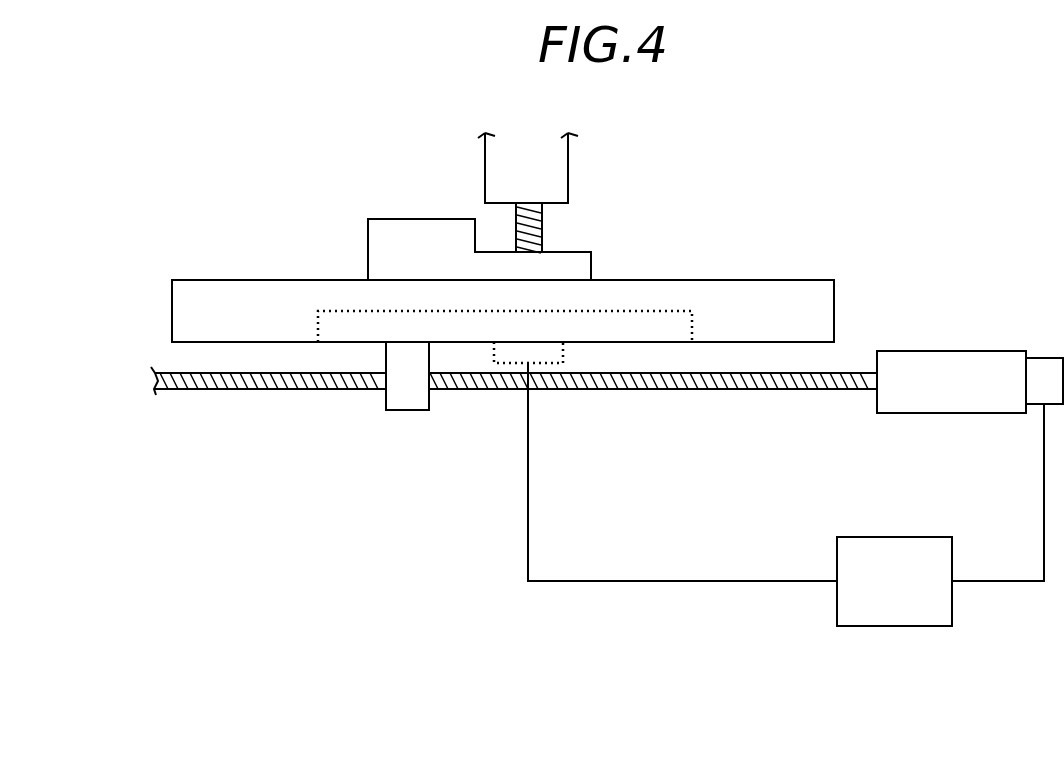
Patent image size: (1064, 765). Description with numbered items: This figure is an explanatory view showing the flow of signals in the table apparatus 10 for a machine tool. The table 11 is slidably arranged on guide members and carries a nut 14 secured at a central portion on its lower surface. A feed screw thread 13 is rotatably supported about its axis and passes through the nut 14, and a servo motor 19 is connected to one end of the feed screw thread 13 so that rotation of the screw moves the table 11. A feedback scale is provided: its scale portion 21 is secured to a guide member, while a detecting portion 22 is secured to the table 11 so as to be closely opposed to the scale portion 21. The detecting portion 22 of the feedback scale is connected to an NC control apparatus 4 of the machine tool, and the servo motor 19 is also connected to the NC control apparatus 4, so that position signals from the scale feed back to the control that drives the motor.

The table apparatus 10 is at (337, 225).
The table 11 is at (203, 300).
The feed screw thread 13 is at (203, 390).
The nut 14 is at (405, 400).
The servo motor 19 is at (940, 365).
The scale portion 21 is at (675, 309).
The detecting portion 22 is at (503, 366).
The NC control apparatus 4 is at (915, 616).